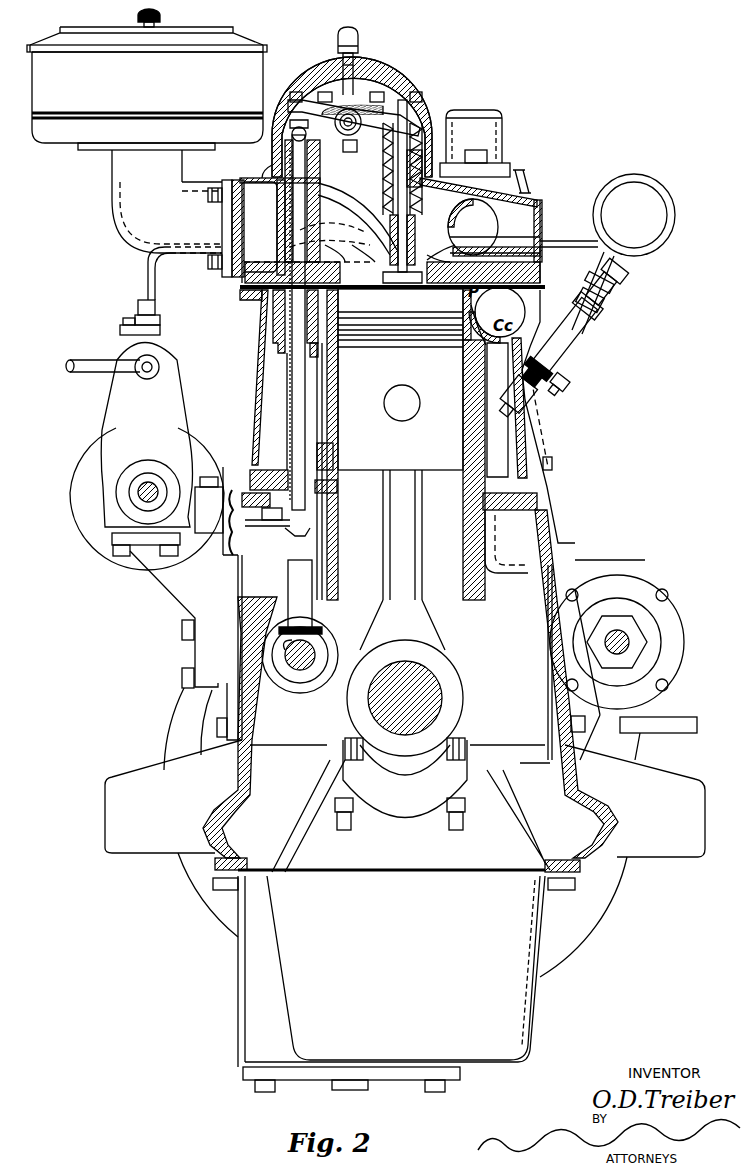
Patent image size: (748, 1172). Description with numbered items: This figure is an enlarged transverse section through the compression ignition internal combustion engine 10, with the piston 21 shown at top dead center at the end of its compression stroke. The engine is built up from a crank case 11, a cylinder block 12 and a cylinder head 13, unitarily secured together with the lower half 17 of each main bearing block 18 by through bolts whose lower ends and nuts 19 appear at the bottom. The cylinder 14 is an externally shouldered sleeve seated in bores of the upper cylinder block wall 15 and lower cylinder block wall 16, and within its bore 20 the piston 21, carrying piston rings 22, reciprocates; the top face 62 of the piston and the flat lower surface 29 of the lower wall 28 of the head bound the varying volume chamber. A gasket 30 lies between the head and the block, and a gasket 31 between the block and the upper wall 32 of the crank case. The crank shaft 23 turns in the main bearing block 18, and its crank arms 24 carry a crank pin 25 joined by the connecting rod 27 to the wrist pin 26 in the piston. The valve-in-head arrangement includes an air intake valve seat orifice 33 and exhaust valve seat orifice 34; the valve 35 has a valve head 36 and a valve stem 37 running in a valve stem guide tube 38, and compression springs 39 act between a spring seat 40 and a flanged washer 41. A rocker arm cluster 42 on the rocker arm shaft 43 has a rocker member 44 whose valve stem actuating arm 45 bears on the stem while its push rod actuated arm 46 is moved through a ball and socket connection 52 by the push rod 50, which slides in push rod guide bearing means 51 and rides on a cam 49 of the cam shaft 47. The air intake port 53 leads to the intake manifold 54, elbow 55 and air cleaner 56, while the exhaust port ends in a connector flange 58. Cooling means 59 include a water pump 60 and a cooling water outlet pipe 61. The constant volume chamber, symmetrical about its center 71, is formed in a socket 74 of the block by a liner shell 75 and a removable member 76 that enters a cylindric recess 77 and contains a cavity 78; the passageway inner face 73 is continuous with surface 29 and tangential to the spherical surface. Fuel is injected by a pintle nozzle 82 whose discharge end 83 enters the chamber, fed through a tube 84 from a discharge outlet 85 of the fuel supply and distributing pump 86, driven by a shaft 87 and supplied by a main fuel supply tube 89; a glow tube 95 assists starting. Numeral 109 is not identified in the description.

The compression ignition internal combustion engine 10 is at (580, 950).
The crank case 11 is at (580, 785).
The cylinder block 12 is at (520, 400).
The cylinder head 13 is at (512, 182).
The cylinder 14 is at (476, 600).
The upper cylinder block wall 15 is at (548, 295).
The lower cylinder block wall 16 is at (326, 445).
The lower half of main bearing block 17 is at (392, 845).
The main bearing block 18 is at (330, 805).
The through bolt lower ends and nuts 19 is at (411, 816).
The bore 20 is at (342, 535).
The piston 21 is at (405, 613).
The piston rings 22 is at (392, 345).
The crank shaft 23 is at (470, 748).
The crank arms 24 is at (405, 779).
The crank pin 25 is at (440, 688).
The wrist pin 26 is at (408, 398).
The connecting rod 27 is at (428, 615).
The lower wall of cylinder head 28 is at (495, 230).
The lower surface of cylinder head wall 29 is at (370, 303).
The gasket 30 is at (250, 296).
The gasket 31 is at (226, 485).
The upper wall of crank case 32 is at (270, 522).
The air intake valve seat orifice 33 is at (438, 300).
The exhaust valve seat orifice 34 is at (403, 300).
The valve 35 is at (353, 183).
The valve head 36 is at (388, 303).
The valve stem 37 is at (425, 115).
The valve stem guide tube 38 is at (357, 216).
The compression springs 39 is at (430, 145).
The spring seat 40 is at (332, 215).
The flanged washer 41 is at (420, 88).
The rocker arm cluster 42 is at (392, 100).
The rocker arm shaft 43 is at (335, 137).
The rocker member 44 is at (376, 100).
The valve stem actuating arm 45 is at (364, 108).
The push rod actuated arm 46 is at (333, 46).
The cam shaft 47 is at (300, 670).
The cam 49 is at (285, 660).
The push rod 50 is at (292, 403).
The push rod guide bearing means 51 is at (275, 375).
The ball and socket connection 52 is at (268, 105).
The air intake port 53 is at (307, 236).
The intake manifold 54 is at (255, 185).
The elbow 55 is at (167, 217).
The air cleaner 56 is at (147, 95).
The connector flange 58 is at (537, 195).
The cooling means 59 is at (596, 570).
The water pump 60 is at (665, 585).
The cooling water outlet pipe 61 is at (490, 115).
The top face of piston 62 is at (350, 303).
The center of constant volume chamber 71 is at (514, 315).
The inner face of passageway 73 is at (484, 315).
The socket 74 is at (495, 352).
The liner shell 75 is at (504, 352).
The removable member 76 is at (558, 273).
The cylindric recess 77 is at (553, 258).
The cavity 78 is at (497, 315).
The pintle nozzle 82 is at (600, 300).
The discharge end of nozzle 83 is at (561, 339).
The tube 84 is at (148, 266).
The discharge outlet 85 is at (158, 312).
The fuel supply and distributing pump 86 is at (154, 457).
The shaft 87 is at (138, 492).
The main fuel supply tube 89 is at (100, 374).
The glow tube 95 is at (560, 385).
The crankcase bolt 109 is at (470, 830).